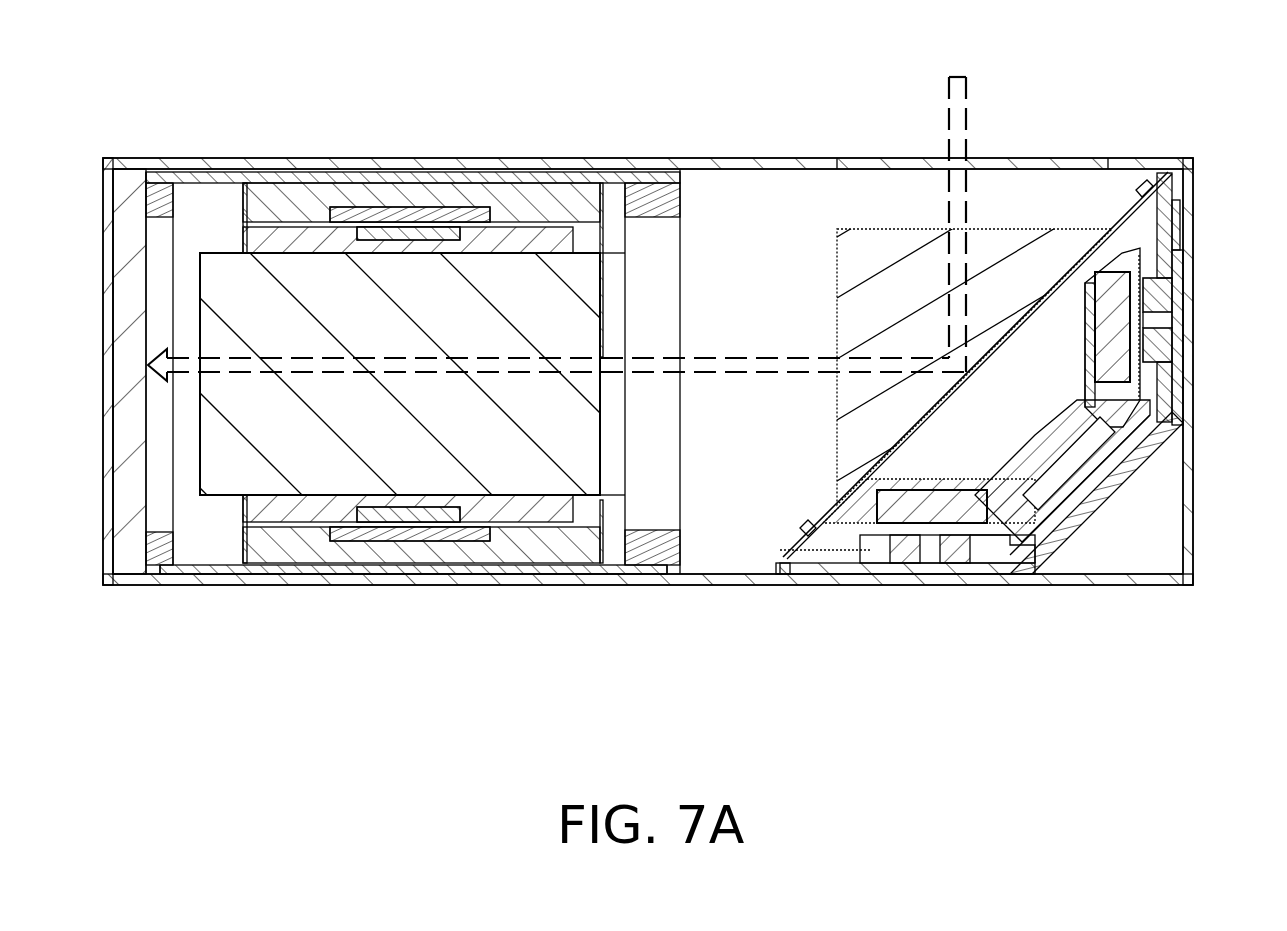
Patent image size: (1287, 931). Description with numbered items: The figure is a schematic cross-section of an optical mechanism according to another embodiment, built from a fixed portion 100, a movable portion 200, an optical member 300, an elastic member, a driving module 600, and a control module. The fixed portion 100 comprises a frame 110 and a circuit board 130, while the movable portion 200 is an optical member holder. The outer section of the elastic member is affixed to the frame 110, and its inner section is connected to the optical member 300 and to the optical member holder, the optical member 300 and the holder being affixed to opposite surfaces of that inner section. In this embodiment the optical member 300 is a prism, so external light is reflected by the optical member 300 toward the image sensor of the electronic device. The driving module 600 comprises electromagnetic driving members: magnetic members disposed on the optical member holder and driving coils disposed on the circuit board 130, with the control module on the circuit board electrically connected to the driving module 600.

The optical member 300 is at (877, 247).
The movable portion 200 is at (855, 538).
The driving module 600 is at (947, 568).
The fixed portion 100 is at (1108, 512).
The frame 110 is at (1176, 213).
The circuit board 130 is at (1178, 375).